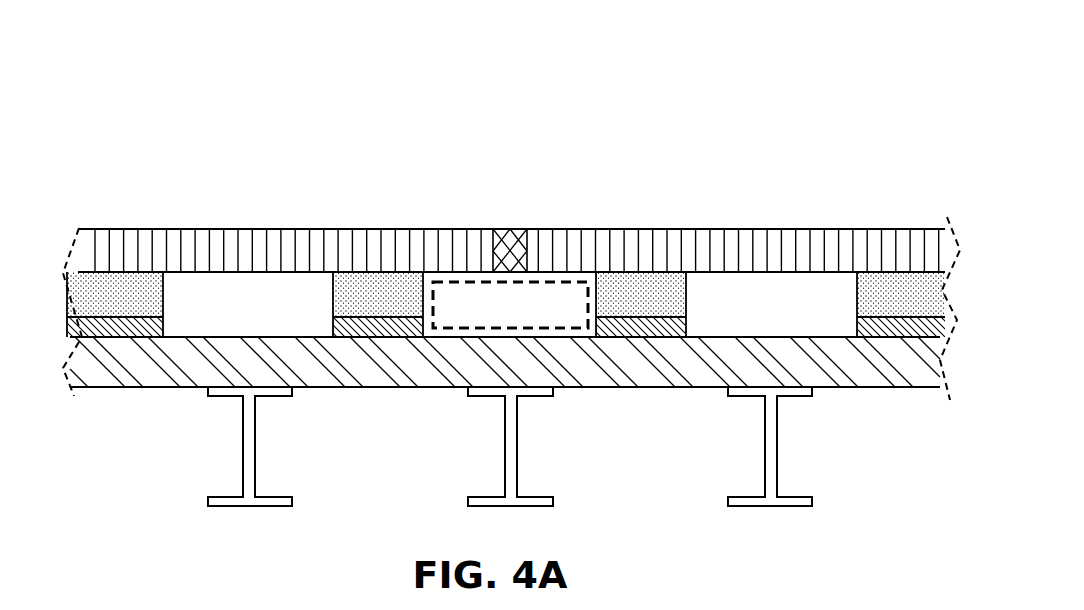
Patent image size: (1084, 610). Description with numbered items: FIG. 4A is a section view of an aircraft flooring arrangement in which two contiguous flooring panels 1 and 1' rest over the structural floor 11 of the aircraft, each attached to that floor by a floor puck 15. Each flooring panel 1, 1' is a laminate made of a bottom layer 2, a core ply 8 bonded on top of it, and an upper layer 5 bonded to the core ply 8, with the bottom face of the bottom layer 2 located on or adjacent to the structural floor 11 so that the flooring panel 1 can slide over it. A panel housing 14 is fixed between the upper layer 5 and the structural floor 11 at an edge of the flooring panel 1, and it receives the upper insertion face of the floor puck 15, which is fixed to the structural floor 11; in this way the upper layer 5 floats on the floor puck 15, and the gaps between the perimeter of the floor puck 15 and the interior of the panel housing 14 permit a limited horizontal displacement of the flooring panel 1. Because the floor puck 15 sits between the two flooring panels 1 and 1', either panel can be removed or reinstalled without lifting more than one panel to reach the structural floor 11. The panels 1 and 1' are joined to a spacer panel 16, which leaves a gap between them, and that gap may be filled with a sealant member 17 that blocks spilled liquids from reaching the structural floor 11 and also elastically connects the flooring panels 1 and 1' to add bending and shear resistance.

The flooring panel 1 is at (511, 178).
The flooring panel 1' is at (772, 178).
The bottom layer 2 is at (116, 387).
The upper layer 5 is at (307, 243).
The core ply 8 is at (113, 305).
The structural floor 11 is at (550, 307).
The panel housing 14 is at (597, 350).
The floor puck 15 is at (553, 280).
The spacer panel 16 is at (233, 273).
The sealant member 17 is at (517, 230).